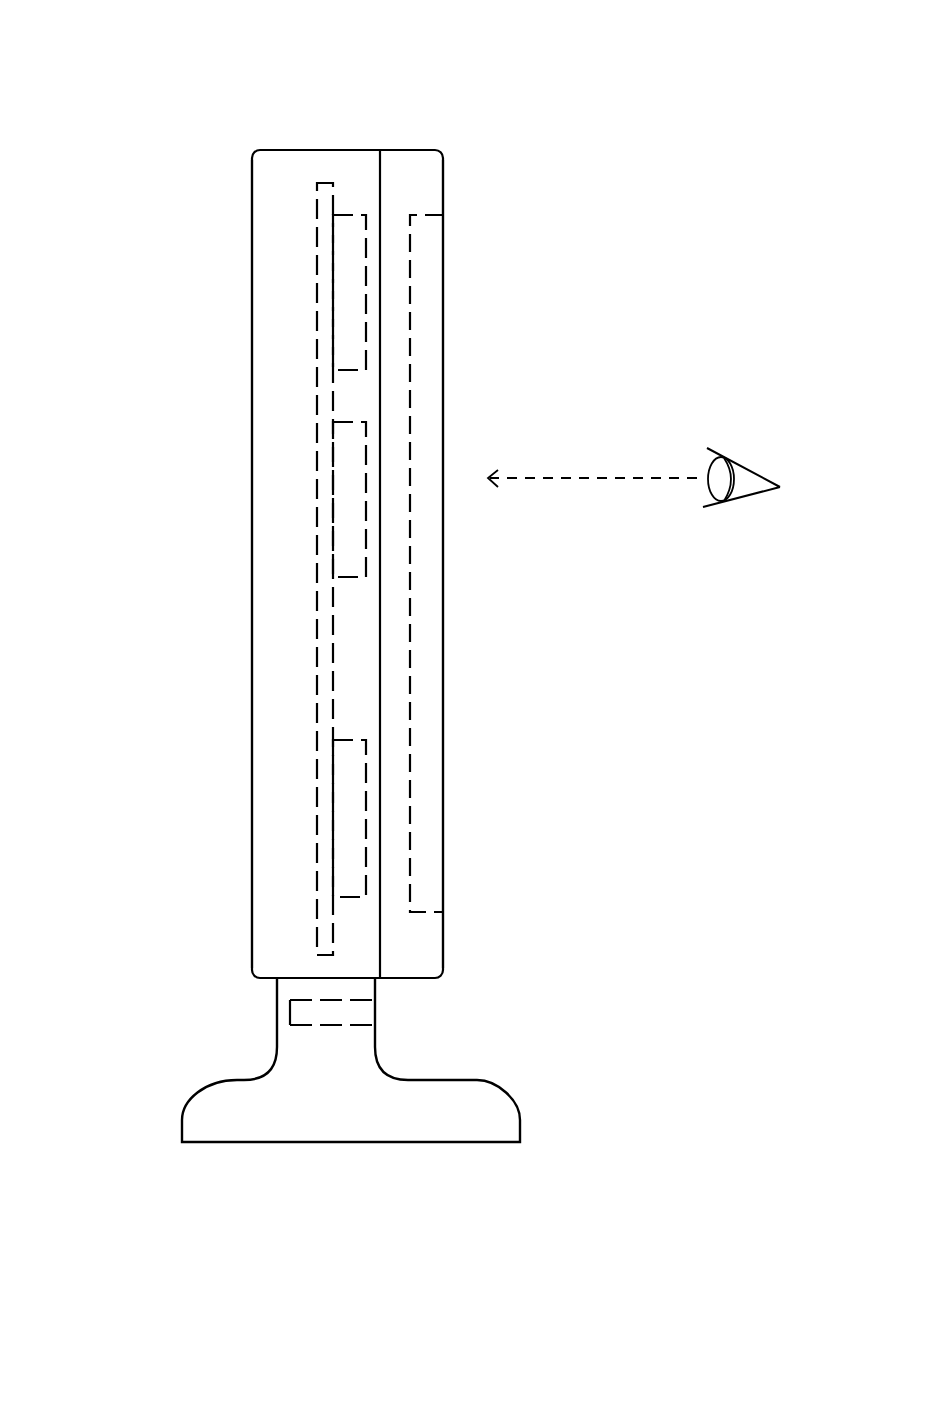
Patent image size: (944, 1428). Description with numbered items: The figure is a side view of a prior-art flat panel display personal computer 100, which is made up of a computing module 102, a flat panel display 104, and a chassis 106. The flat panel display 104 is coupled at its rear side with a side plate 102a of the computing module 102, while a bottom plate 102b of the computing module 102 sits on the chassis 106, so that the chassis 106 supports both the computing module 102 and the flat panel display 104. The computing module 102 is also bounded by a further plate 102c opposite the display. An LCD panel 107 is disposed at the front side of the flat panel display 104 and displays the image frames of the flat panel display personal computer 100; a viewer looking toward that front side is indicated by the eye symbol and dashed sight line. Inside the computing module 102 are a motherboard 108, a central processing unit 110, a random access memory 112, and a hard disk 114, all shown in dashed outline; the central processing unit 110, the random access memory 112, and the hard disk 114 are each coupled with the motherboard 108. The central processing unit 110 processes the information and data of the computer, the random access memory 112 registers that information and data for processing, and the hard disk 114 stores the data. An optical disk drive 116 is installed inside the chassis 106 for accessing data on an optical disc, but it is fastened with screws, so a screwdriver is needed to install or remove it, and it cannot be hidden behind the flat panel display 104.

The flat panel display personal computer 100 is at (628, 150).
The computing module 102 is at (307, 149).
The side plate 102a is at (380, 188).
The bottom plate 102b is at (268, 982).
The rear surface of housing 102c is at (270, 193).
The flat panel display 104 is at (432, 193).
The chassis 106 is at (456, 1130).
The LCD panel 107 is at (430, 352).
The motherboard 108 is at (326, 726).
The central processing unit 110 is at (346, 232).
The random access memory 112 is at (341, 472).
The hard disk 114 is at (342, 876).
The optical disk drive 116 is at (362, 1012).